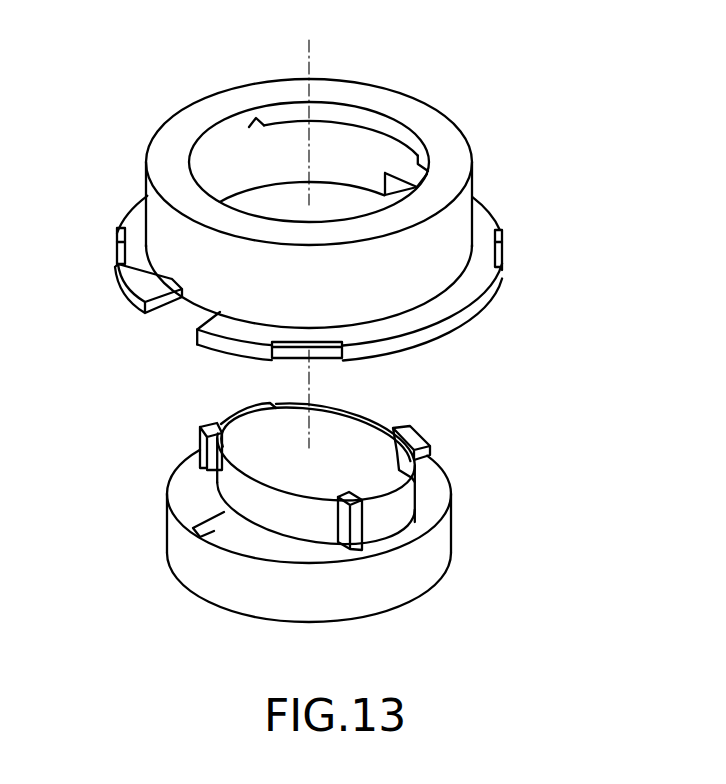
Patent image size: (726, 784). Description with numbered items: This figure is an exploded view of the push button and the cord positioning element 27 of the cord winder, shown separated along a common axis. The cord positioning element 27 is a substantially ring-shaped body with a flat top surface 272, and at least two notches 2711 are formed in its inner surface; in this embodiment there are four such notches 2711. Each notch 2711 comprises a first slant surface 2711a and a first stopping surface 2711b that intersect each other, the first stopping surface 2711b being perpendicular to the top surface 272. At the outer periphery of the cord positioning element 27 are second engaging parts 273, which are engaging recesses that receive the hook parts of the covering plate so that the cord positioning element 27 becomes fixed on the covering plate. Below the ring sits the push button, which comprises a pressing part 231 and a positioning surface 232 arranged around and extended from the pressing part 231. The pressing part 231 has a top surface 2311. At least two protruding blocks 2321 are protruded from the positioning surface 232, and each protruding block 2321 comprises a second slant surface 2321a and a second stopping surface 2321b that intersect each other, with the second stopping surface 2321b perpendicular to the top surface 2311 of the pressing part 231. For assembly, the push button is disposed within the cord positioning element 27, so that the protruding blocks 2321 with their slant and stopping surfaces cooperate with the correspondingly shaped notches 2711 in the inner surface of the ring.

The cord positioning element 27 is at (449, 100).
The top surface 272 is at (361, 92).
The notches 2711 is at (275, 39).
The first slant surface 2711a is at (257, 120).
The first stopping surface 2711b is at (264, 127).
The second engaging part 273 is at (118, 250).
The positioning surface 232 is at (188, 487).
The pressing part 231 is at (390, 523).
The top surface 2311 is at (240, 423).
The protruding blocks 2321 is at (333, 540).
The second slant surface 2321a is at (407, 436).
The second stopping surface 2321b is at (440, 463).